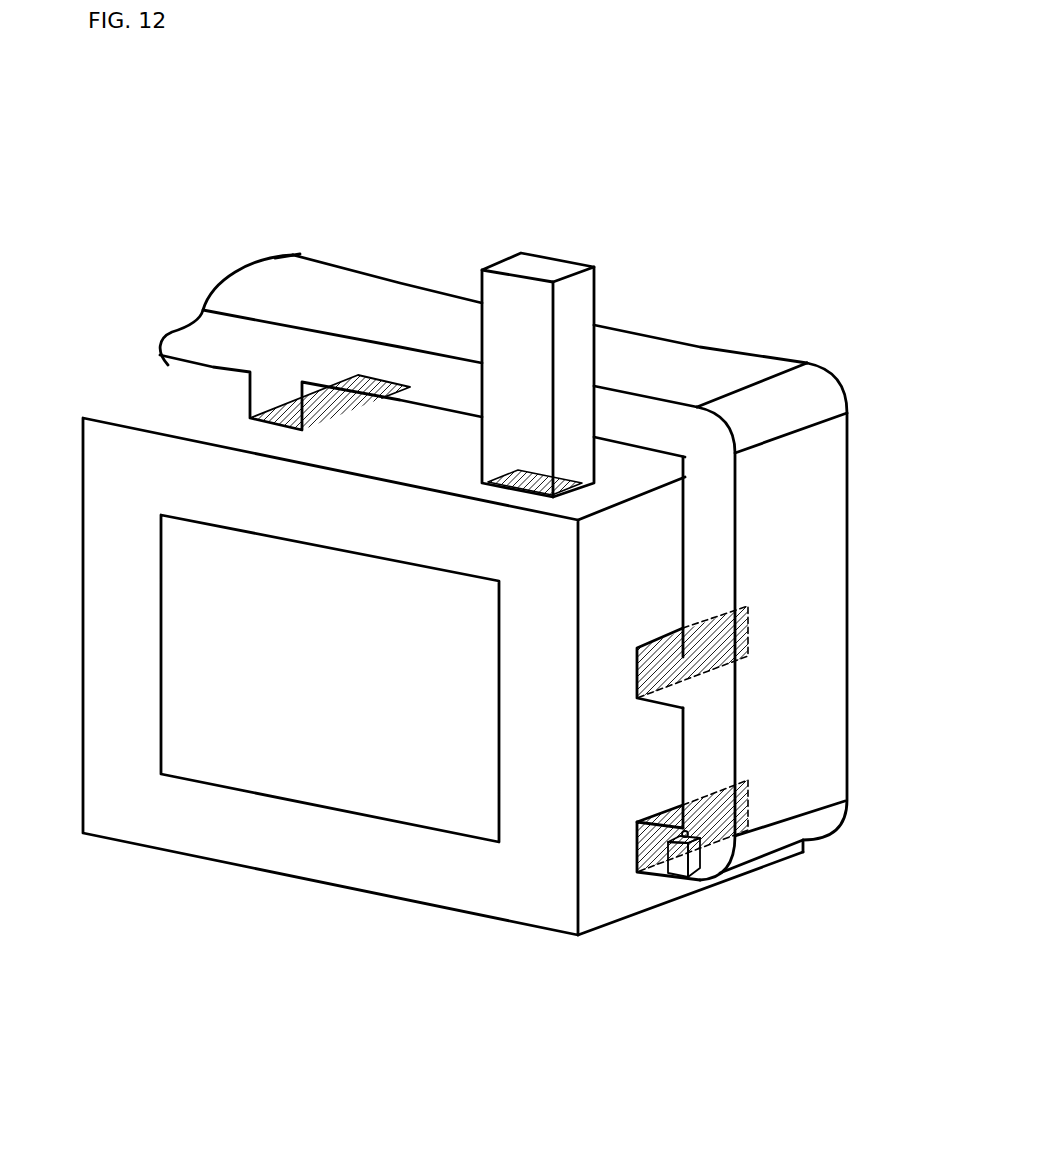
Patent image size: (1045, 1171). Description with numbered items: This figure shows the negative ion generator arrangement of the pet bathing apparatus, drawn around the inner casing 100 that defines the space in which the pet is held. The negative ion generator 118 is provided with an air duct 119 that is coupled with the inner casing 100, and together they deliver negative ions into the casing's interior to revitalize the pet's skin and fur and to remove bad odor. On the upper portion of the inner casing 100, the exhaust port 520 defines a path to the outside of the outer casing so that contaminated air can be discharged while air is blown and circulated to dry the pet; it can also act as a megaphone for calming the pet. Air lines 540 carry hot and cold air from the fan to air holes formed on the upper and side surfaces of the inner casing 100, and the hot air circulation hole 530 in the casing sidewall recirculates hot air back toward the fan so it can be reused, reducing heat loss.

The inner casing 100 is at (148, 412).
The negative ion generator 118 is at (692, 865).
The air duct 119 is at (545, 473).
The exhaust port 520 is at (525, 295).
The hot air circulation hole 530 is at (712, 638).
The air line 540 is at (335, 398).